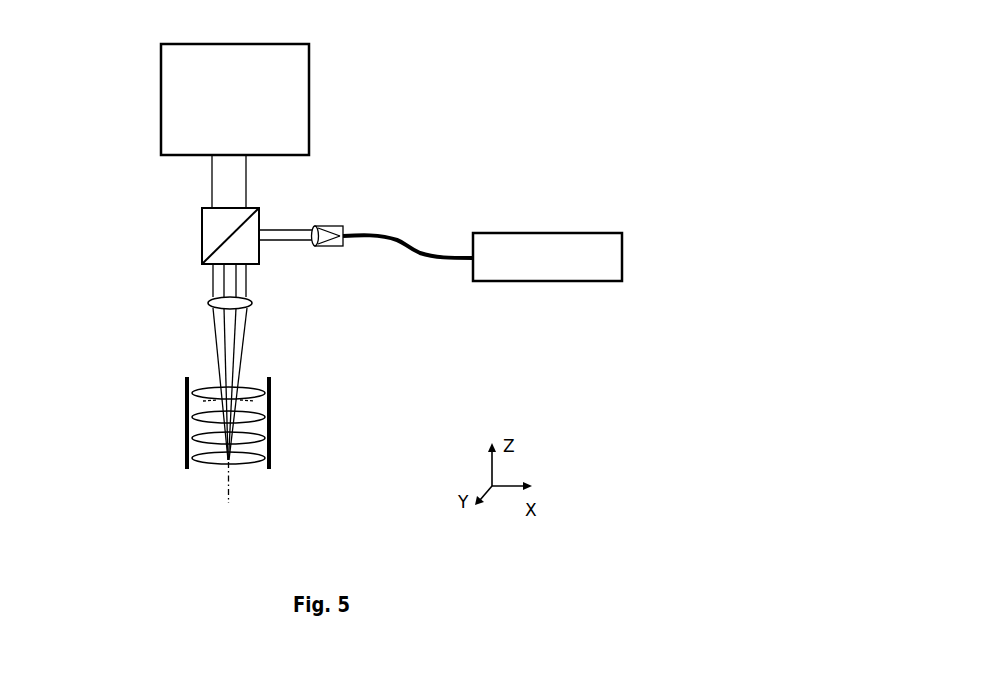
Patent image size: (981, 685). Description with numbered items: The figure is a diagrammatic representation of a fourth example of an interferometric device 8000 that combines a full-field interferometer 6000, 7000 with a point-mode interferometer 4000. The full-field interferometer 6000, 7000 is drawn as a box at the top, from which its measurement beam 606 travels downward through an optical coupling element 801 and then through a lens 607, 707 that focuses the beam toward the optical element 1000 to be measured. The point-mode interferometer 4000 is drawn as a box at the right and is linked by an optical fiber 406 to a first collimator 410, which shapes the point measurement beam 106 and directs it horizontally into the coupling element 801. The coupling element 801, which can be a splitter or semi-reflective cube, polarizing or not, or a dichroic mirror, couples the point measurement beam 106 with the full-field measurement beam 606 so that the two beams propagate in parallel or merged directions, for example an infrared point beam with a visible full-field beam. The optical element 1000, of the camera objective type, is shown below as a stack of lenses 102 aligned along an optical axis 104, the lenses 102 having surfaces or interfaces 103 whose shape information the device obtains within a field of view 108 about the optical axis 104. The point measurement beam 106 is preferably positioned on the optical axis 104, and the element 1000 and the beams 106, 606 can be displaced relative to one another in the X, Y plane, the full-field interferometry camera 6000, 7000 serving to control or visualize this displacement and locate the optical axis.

The interferometric device 8000 is at (553, 132).
The full-field interferometer 6000 is at (315, 60).
The full-field interferometer 7000 is at (334, 99).
The optical coupling element 801 is at (202, 236).
The objective lens 607 is at (208, 303).
The objective lens 707 is at (189, 292).
The measurement beam 606 is at (245, 331).
The point measurement beam 106 is at (229, 367).
The first collimator 410 is at (328, 225).
The optical fiber 406 is at (398, 238).
The point-mode interferometer 4000 is at (627, 256).
The optical element 1000 is at (170, 396).
The field of view 108 is at (270, 403).
The surfaces or interfaces 103 is at (187, 453).
The lenses 102 is at (270, 459).
The optical axis 104 is at (229, 493).